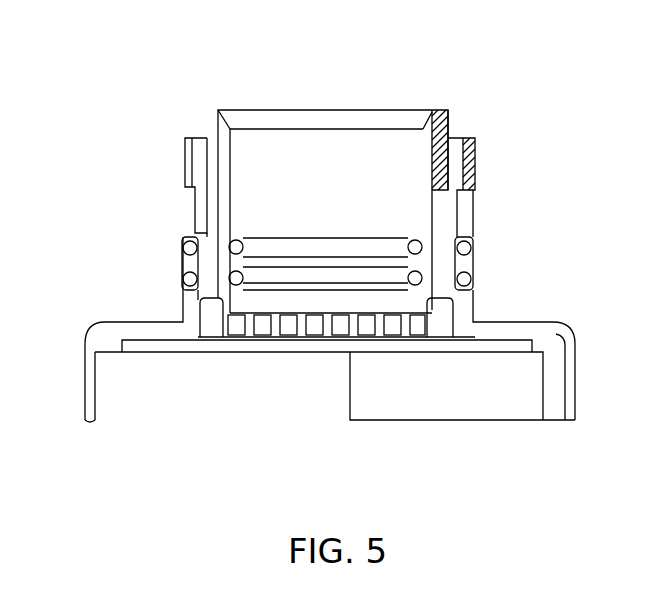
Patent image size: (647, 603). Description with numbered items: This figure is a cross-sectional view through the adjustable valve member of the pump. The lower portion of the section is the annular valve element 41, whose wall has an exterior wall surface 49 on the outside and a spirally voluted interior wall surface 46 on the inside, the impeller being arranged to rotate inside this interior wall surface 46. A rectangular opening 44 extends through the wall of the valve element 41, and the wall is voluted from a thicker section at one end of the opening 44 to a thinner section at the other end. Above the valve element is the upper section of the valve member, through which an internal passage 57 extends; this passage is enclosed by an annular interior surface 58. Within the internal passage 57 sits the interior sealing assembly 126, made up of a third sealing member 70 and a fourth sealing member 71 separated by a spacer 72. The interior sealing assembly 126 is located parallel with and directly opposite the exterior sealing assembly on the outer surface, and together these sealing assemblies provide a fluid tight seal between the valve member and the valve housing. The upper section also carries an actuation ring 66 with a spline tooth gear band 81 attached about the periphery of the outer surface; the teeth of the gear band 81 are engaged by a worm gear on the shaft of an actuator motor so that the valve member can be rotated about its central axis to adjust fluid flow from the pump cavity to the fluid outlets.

The annular valve element 41 is at (556, 318).
The rectangular opening 44 is at (231, 405).
The interior wall surface 46 is at (412, 410).
The exterior wall surface 49 is at (83, 391).
The internal passage 57 is at (319, 131).
The annular interior surface 58 is at (417, 180).
The actuation ring 66 is at (195, 210).
The third sealing member 70 is at (257, 243).
The fourth sealing member 71 is at (387, 275).
The spacer 72 is at (337, 260).
The spline tooth gear band 81 is at (468, 165).
The interior sealing assembly 126 is at (264, 218).